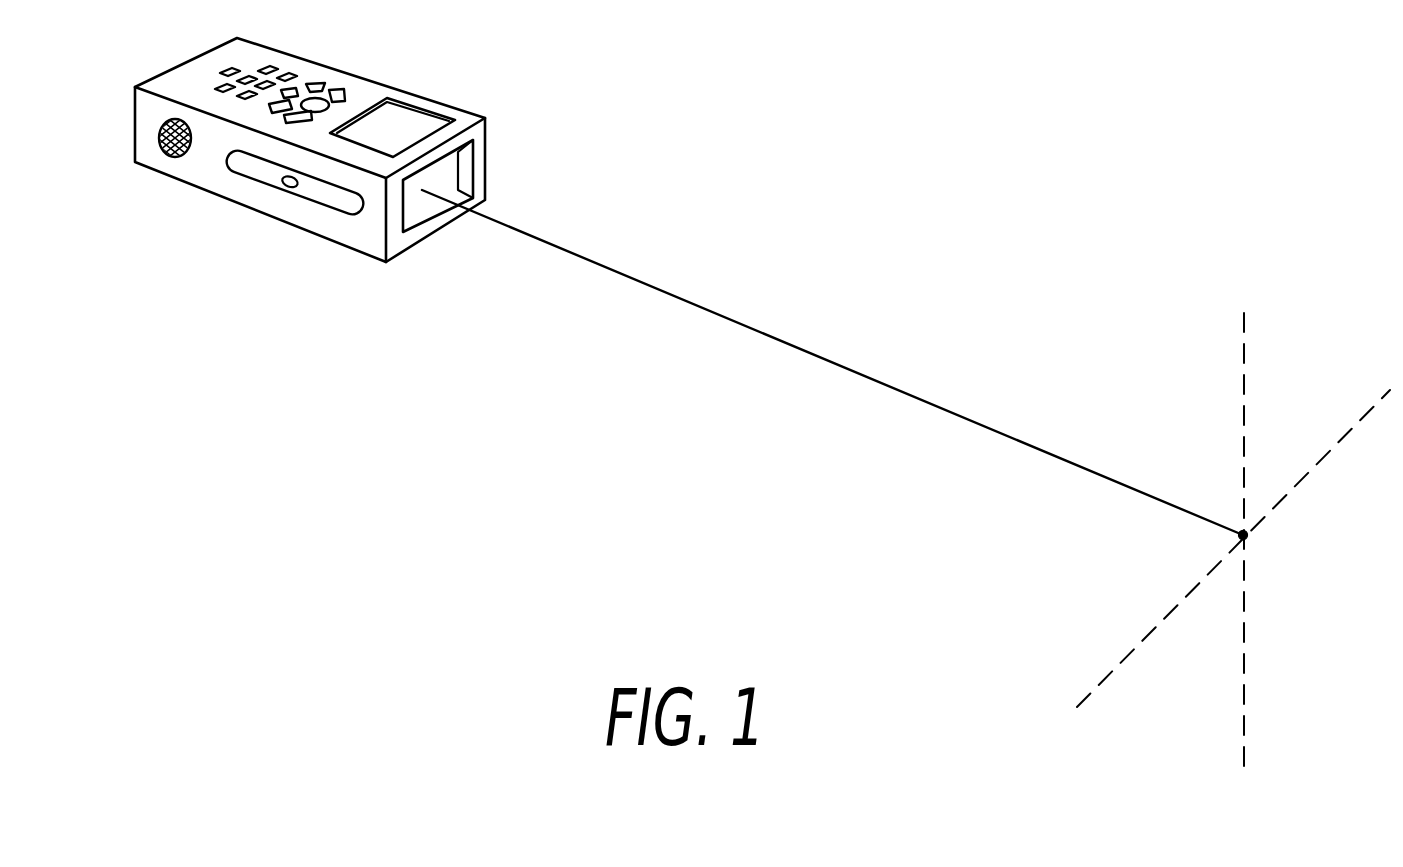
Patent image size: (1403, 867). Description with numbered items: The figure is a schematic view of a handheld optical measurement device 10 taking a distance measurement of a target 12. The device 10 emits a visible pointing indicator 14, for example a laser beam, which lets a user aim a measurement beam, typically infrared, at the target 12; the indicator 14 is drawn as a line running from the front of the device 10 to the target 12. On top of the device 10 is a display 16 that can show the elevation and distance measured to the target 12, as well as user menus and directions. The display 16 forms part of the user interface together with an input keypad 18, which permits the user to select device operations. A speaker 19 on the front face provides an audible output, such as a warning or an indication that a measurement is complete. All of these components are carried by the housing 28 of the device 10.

The handheld optical measurement device 10 is at (362, 182).
The target 12 is at (1250, 534).
The visible pointing indicator 14 is at (737, 322).
The display 16 is at (395, 127).
The input keypad 18 is at (228, 70).
The speaker 19 is at (170, 155).
The housing 28 is at (367, 237).